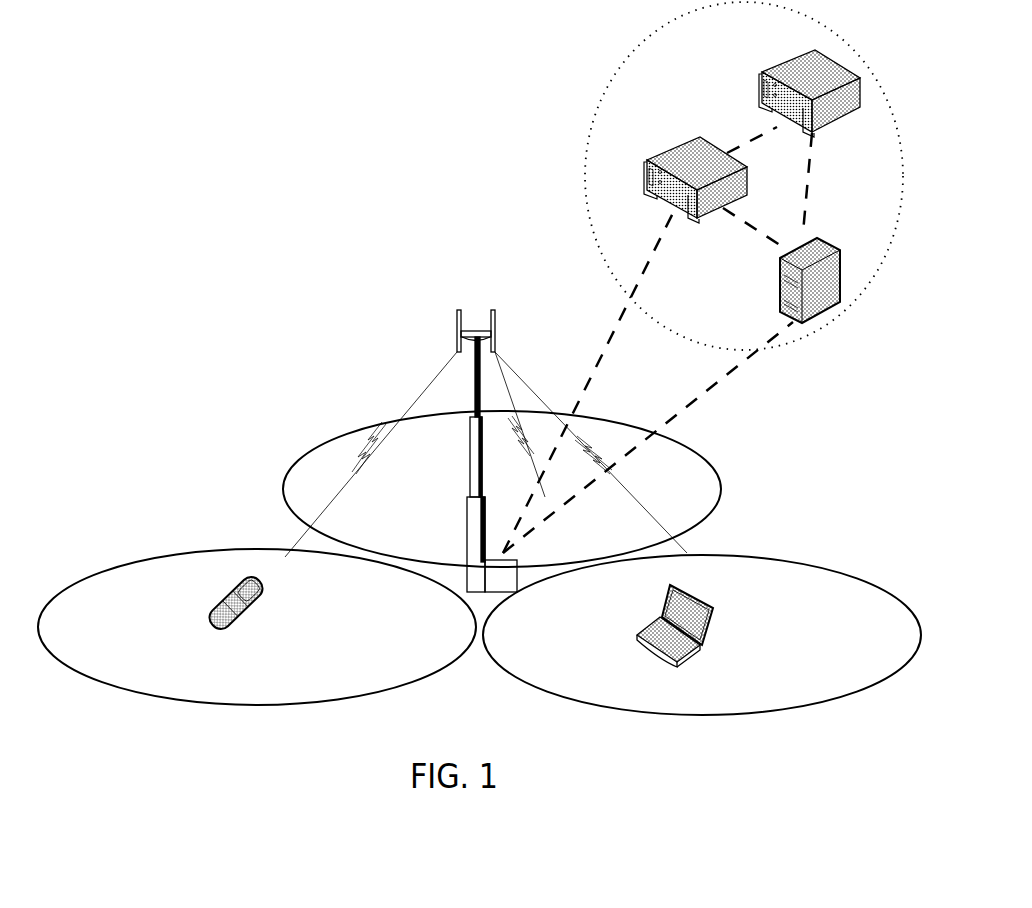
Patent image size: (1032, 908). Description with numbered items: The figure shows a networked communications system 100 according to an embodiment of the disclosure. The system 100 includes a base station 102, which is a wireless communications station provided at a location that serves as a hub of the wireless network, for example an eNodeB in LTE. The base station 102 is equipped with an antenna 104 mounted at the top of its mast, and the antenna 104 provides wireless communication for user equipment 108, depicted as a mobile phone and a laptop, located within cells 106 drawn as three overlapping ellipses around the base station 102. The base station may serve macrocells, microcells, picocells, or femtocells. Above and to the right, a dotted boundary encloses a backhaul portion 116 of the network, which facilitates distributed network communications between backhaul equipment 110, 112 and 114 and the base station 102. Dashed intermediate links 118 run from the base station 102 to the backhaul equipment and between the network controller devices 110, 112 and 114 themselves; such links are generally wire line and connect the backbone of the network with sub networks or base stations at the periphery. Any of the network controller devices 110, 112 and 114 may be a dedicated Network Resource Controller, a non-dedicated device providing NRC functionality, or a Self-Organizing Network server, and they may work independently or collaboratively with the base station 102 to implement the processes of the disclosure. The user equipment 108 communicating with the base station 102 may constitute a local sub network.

The networked communications system 100 is at (370, 172).
The base station 102 is at (467, 540).
The antenna 104 is at (457, 322).
The cell 106 is at (300, 447).
The user equipment 108 is at (258, 620).
The network controller device 110 is at (778, 300).
The network controller device 112 is at (660, 158).
The network controller device 114 is at (762, 90).
The backhaul portion 116 is at (600, 110).
The intermediate link 118 is at (618, 302).